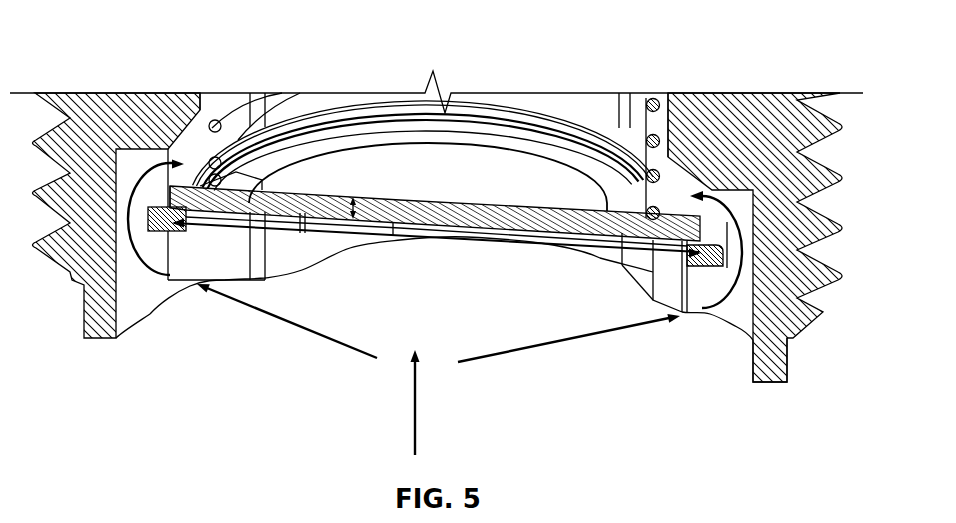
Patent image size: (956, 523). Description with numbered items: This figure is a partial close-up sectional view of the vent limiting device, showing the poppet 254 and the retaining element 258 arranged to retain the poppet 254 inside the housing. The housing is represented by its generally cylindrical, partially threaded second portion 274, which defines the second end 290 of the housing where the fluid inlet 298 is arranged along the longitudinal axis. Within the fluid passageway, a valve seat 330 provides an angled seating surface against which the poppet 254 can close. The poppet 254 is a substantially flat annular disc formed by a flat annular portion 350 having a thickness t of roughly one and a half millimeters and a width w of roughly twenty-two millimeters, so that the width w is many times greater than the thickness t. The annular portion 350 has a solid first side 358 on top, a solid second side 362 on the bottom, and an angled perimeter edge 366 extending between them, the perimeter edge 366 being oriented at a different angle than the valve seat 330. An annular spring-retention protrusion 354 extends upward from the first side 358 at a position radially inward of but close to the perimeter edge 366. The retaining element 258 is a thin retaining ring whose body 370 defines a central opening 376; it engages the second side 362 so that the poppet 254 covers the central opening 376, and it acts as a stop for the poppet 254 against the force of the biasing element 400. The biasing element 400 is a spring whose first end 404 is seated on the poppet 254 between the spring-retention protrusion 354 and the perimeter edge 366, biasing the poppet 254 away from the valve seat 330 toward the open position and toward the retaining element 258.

The poppet 254 is at (423, 120).
The flat annular portion 350 is at (476, 166).
The retaining element 258 is at (177, 248).
The second portion of housing 274 is at (827, 208).
The second end of housing 290 is at (773, 383).
The fluid inlet 298 is at (128, 327).
The valve seat 330 is at (625, 178).
The annular spring-retention protrusion 354 is at (661, 125).
The first side 358 is at (457, 189).
The second side 362 is at (480, 232).
The perimeter edge 366 is at (199, 186).
The body 370 is at (649, 315).
The central opening 376 is at (653, 265).
The biasing element 400 is at (228, 120).
The first end of spring 404 is at (285, 143).
The thickness t is at (356, 207).
The width w is at (375, 233).